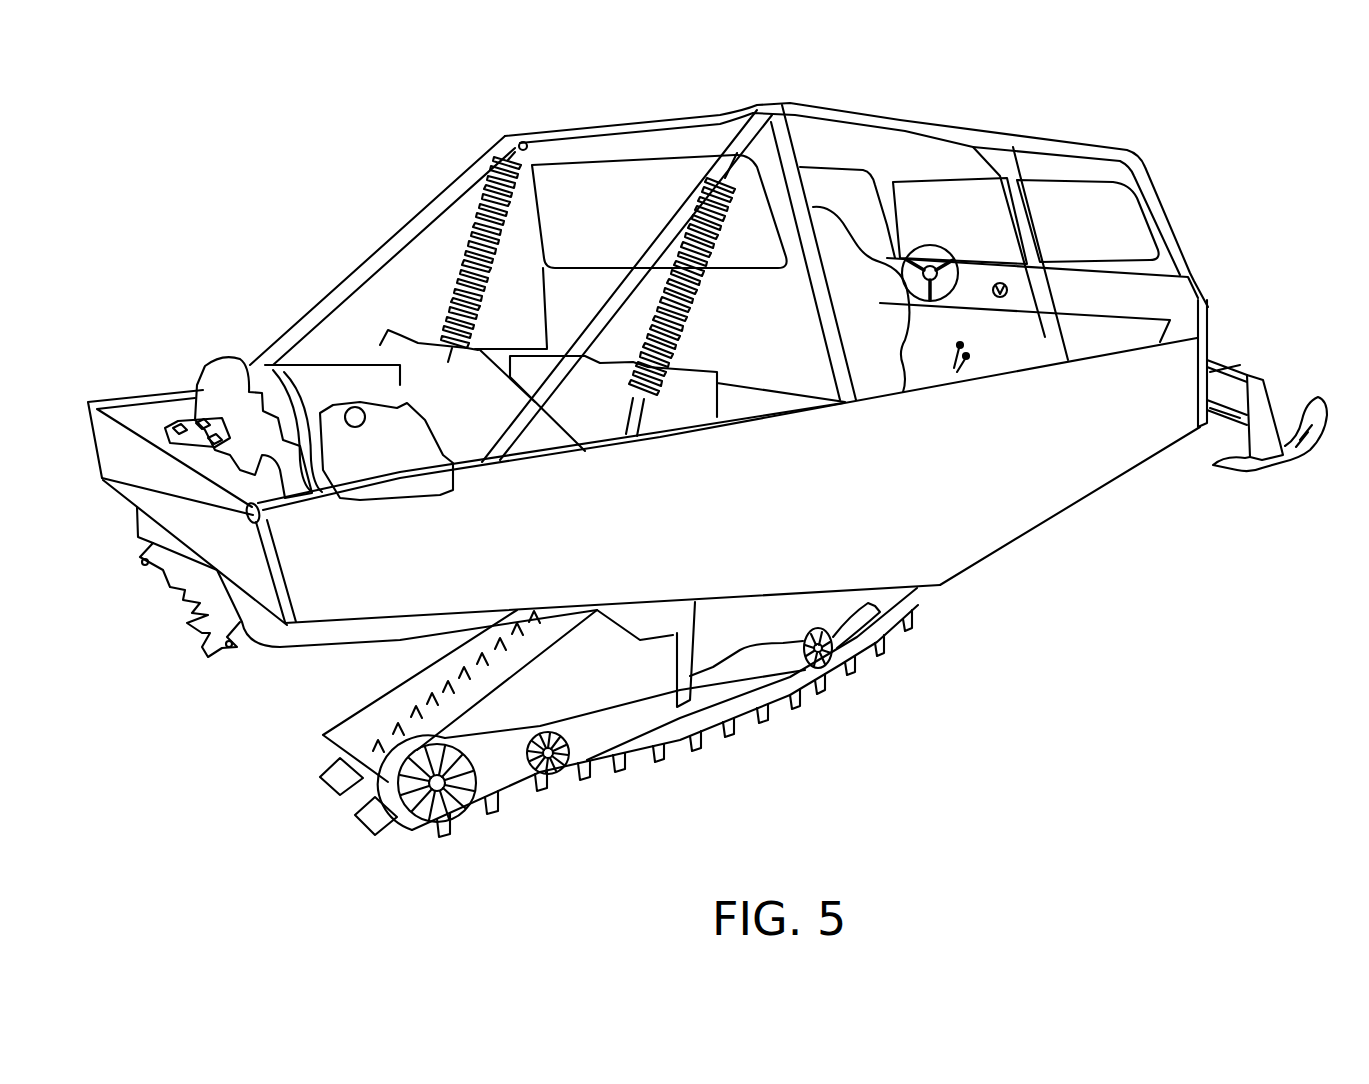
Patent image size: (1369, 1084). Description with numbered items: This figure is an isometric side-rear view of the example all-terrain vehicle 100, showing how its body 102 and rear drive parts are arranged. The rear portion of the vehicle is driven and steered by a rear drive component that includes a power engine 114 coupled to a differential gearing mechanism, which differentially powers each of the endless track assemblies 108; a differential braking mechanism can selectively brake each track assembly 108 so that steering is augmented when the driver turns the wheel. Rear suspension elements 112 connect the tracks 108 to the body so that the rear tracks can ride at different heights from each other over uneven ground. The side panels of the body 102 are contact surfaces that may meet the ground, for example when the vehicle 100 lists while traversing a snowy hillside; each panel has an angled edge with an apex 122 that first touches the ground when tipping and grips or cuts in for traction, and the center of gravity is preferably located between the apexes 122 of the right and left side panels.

The all-terrain vehicle 100 is at (349, 91).
The body 102 is at (1045, 535).
The endless track assembly 108 is at (490, 832).
The rear suspension element 112 is at (468, 230).
The power engine 114 is at (203, 373).
The apex 122 is at (945, 587).